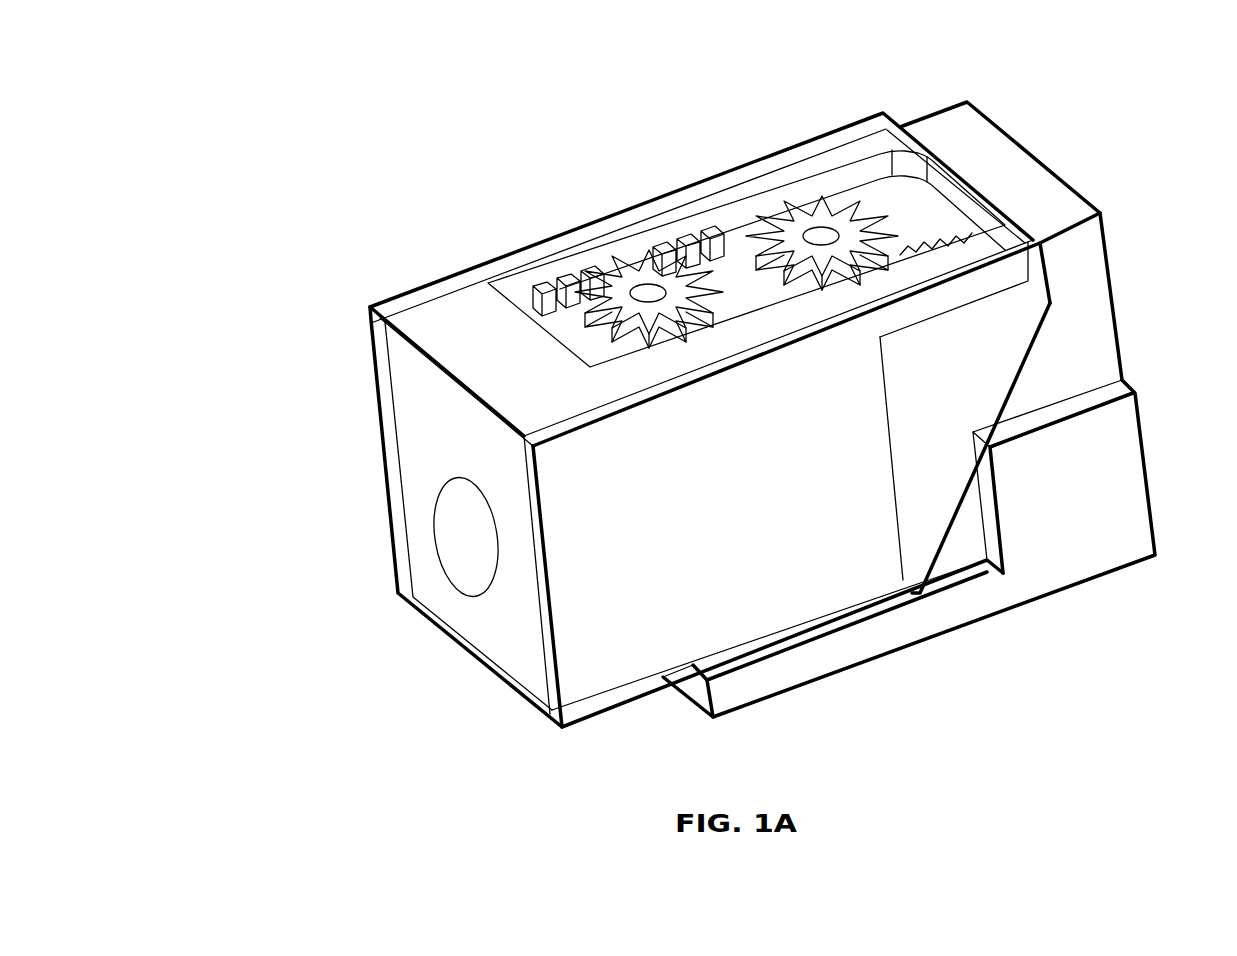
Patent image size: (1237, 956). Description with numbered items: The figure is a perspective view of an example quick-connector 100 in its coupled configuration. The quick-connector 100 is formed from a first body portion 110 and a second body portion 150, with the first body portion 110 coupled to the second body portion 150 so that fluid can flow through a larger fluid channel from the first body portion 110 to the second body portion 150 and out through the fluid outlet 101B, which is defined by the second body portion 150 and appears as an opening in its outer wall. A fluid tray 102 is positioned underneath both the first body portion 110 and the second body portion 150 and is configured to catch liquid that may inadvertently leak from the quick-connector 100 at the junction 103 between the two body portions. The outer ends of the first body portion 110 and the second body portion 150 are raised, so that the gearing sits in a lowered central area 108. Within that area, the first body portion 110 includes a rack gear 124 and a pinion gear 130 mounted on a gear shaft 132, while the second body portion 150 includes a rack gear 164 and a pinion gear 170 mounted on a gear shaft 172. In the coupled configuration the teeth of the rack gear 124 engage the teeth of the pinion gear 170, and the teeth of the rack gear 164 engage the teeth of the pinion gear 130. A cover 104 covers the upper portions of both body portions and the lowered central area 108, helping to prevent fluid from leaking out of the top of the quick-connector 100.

The quick-connector 100 is at (322, 79).
The cover 104 is at (415, 292).
The lowered central area 108 is at (733, 276).
The rack gear 124 is at (531, 272).
The pinion gear 170 is at (610, 283).
The gear shaft 172 is at (647, 290).
The pinion gear 130 is at (783, 233).
The gear shaft 132 is at (822, 234).
The rack gear 164 is at (977, 240).
The first body portion 110 is at (1093, 296).
The fluid tray 102 is at (1095, 528).
The junction 103 is at (885, 555).
The second body portion 150 is at (612, 642).
The fluid outlet 101B is at (468, 570).